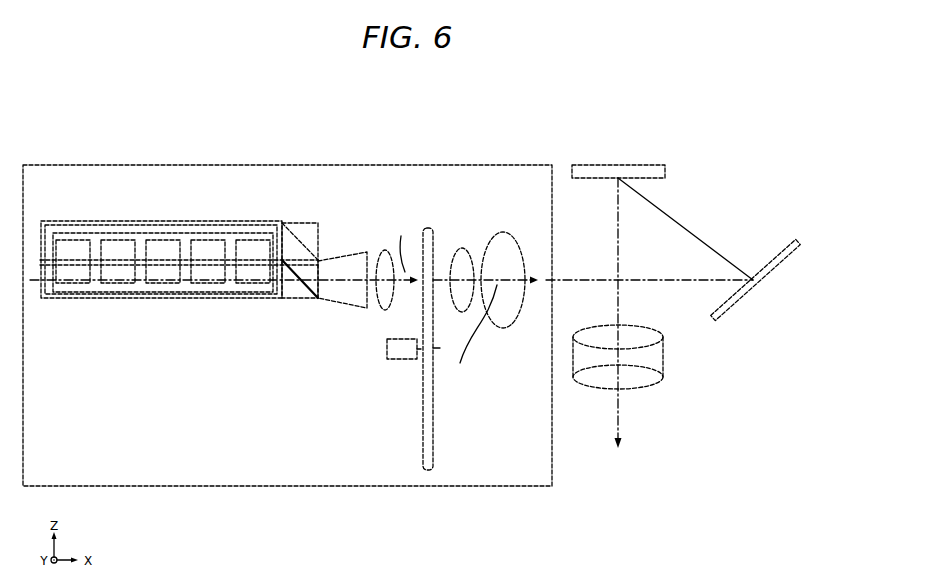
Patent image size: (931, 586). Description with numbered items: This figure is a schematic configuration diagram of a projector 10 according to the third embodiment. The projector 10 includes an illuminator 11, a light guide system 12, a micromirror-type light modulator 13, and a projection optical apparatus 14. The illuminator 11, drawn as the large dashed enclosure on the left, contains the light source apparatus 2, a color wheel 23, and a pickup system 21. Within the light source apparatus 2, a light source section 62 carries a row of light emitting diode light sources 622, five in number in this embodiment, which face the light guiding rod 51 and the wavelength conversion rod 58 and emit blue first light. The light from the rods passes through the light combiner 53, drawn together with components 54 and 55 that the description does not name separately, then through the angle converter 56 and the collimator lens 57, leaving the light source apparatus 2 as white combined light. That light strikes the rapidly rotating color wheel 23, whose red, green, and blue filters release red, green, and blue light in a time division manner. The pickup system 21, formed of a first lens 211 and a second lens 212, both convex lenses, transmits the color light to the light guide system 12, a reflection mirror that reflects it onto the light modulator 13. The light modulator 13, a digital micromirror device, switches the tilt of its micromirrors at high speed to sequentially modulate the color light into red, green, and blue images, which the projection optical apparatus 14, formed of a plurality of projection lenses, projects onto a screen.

The projector 10 is at (388, 285).
The illuminator 11 is at (287, 297).
The light source apparatus 2 is at (217, 273).
The light source section 62 is at (161, 283).
The light emitting diode light source 622 is at (163, 283).
The light guiding rod 51 is at (163, 229).
The wavelength conversion rod 58 is at (179, 305).
The light combiner 53 is at (307, 266).
The dichroic mirror 54 is at (302, 237).
The reflecting prism 55 is at (298, 291).
The angle converter 56 is at (342, 258).
The collimator lens 57 is at (368, 298).
The color wheel 23 is at (408, 349).
The pickup system 21 is at (479, 215).
The first lens 211 is at (455, 223).
The second lens 212 is at (501, 231).
The micromirror-type light modulator 13 is at (618, 145).
The light guide system 12 is at (756, 264).
The projection optical apparatus 14 is at (644, 357).